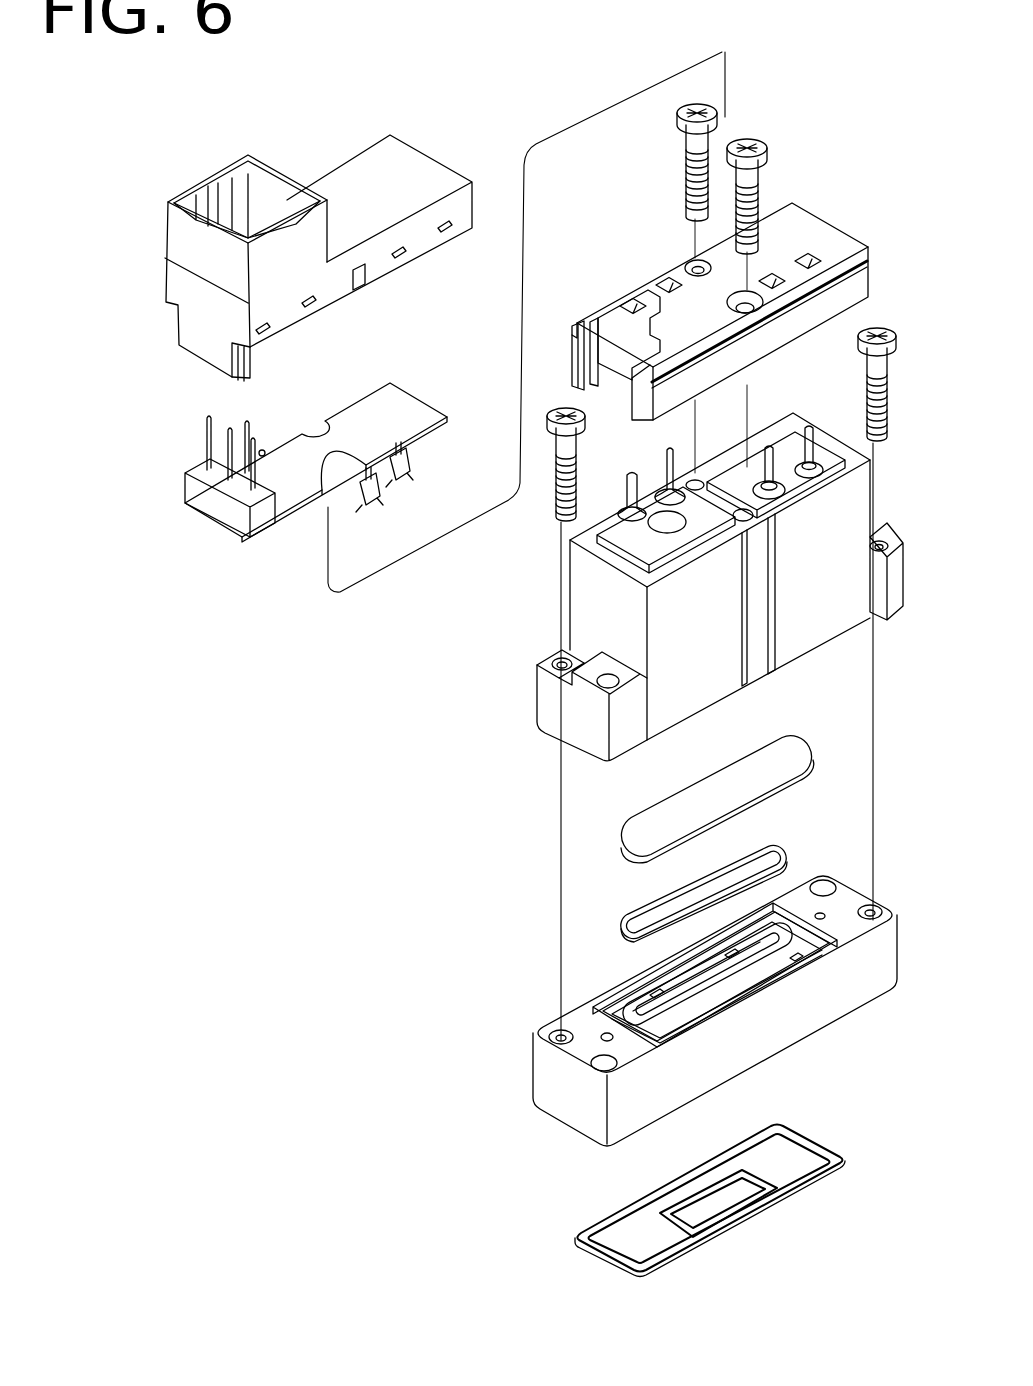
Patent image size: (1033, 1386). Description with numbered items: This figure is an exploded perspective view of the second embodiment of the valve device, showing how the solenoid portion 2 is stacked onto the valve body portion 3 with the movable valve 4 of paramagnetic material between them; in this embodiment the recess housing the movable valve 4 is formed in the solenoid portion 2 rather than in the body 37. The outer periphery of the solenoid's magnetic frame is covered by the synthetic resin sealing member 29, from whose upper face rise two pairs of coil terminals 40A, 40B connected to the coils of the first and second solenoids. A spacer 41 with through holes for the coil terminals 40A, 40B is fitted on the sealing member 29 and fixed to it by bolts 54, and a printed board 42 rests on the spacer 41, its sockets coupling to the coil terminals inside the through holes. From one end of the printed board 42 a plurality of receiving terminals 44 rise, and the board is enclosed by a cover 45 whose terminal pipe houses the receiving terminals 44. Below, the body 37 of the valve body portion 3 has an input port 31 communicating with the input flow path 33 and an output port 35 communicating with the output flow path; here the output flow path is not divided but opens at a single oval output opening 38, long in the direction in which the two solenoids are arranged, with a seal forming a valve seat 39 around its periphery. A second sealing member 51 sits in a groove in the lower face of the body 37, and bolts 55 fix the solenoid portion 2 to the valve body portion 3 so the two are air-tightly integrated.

The solenoid portion 2 is at (470, 560).
The valve body portion 3 is at (651, 1011).
The movable valve 4 is at (612, 823).
The sealing member 29 is at (825, 633).
The input port 31 is at (704, 1190).
The input flow path 33 is at (667, 982).
The output port 35 is at (713, 1208).
The body 37 is at (545, 1077).
The output opening 38 is at (795, 950).
The valve seat 39 is at (779, 849).
The coil terminals 40A is at (647, 448).
The coil terminals 40B is at (772, 448).
The spacer 41 is at (822, 217).
The printed board 42 is at (423, 402).
The receiving terminals 44 is at (232, 430).
The cover 45 is at (428, 157).
The second sealing member 51 is at (823, 1142).
The bolts 54 is at (757, 140).
The bolts 55 is at (562, 410).